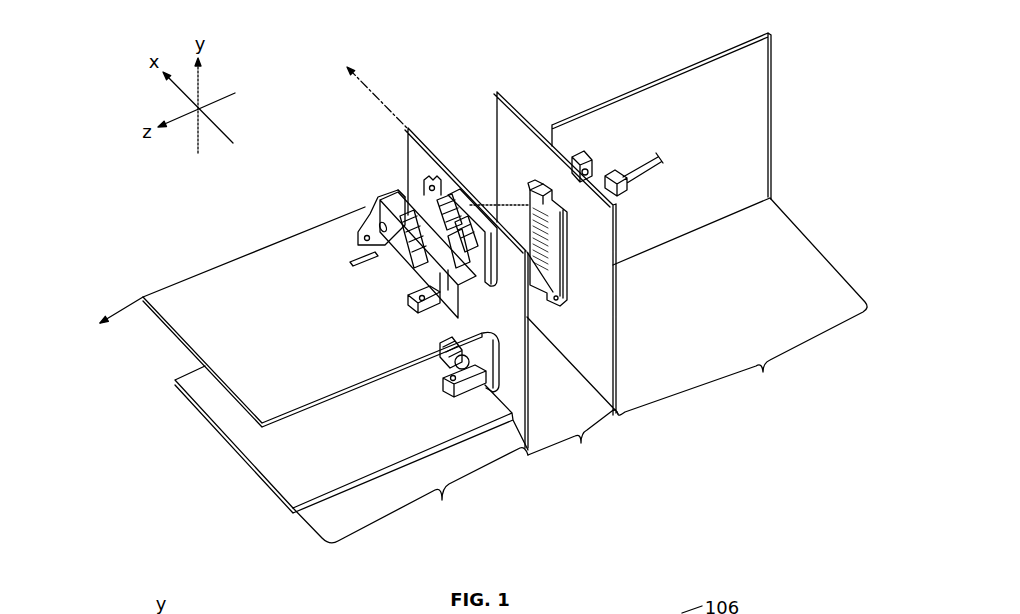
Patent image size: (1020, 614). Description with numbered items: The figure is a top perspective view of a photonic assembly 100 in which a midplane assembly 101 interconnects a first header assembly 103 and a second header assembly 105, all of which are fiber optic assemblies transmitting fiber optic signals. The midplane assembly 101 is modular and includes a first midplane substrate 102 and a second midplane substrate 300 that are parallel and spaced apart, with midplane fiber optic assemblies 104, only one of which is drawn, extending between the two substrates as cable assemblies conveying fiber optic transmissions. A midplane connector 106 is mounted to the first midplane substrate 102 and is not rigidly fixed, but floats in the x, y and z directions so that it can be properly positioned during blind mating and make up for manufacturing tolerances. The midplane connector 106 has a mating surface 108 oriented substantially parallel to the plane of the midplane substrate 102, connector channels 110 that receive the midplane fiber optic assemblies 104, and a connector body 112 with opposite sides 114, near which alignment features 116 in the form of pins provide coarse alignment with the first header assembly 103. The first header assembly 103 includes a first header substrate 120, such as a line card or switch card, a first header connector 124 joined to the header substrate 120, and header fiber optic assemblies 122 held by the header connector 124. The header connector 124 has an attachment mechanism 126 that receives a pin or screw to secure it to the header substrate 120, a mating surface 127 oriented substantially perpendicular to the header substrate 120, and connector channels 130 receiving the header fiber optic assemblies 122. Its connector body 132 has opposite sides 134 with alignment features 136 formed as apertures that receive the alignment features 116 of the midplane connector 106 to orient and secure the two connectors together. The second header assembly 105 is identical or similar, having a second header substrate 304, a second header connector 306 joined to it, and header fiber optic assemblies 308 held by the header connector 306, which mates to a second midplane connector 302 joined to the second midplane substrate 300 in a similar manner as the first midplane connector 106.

The photonic assembly 100 is at (343, 38).
The midplane assembly 101 is at (575, 438).
The first midplane substrate 102 is at (412, 130).
The first header assembly 103 is at (351, 454).
The midplane fiber optic assemblies 104 is at (518, 205).
The second header assembly 105 is at (740, 306).
The midplane connector 106 is at (437, 182).
The mating surface 108 is at (473, 258).
The connector channels 110 is at (450, 200).
The connector body 112 is at (459, 212).
The sides 114 is at (418, 187).
The alignment features 116 is at (407, 212).
The first header substrate 120 is at (178, 296).
The header fiber optic assemblies 122 is at (330, 244).
The first header connector 124 is at (368, 213).
The attachment mechanism 126 is at (345, 257).
The mating surface 127 is at (395, 196).
The connector channels 130 is at (428, 288).
The connector body 132 is at (402, 255).
The sides 134 is at (352, 206).
The alignment features 136 is at (413, 312).
The second midplane substrate 300 is at (498, 92).
The second midplane connector 302 is at (533, 185).
The second header substrate 304 is at (676, 70).
The second header connector 306 is at (578, 157).
The header fiber optic assemblies 308 is at (626, 158).